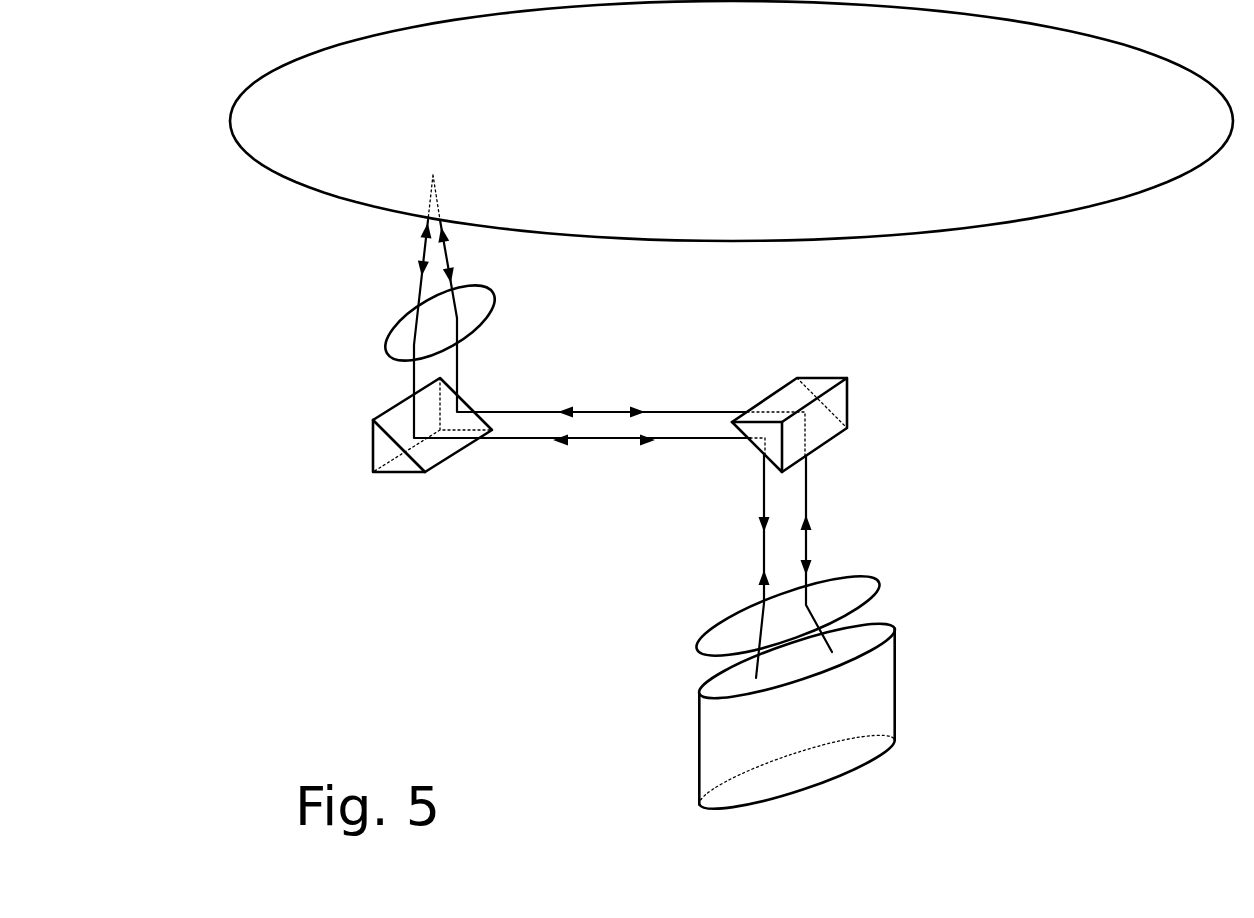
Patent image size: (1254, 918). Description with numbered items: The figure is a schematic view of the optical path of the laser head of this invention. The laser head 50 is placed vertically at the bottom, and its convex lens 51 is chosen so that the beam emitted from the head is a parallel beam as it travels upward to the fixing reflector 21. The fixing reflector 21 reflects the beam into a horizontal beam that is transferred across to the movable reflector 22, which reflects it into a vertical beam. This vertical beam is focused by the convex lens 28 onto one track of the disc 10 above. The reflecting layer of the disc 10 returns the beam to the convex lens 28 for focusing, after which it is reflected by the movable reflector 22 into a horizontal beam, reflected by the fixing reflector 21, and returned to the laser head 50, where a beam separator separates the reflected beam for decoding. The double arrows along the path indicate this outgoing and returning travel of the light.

The disc 10 is at (1112, 135).
The fixing reflector 21 is at (827, 430).
The movable reflector 22 is at (372, 450).
The convex lens 28 is at (403, 342).
The laser head 50 is at (867, 698).
The convex lens 51 is at (730, 632).